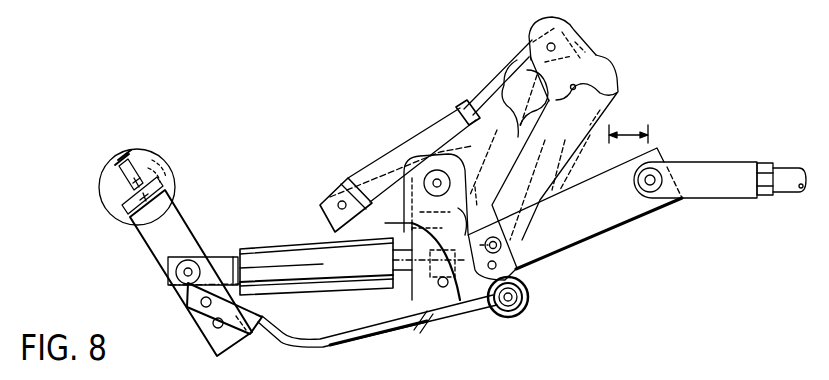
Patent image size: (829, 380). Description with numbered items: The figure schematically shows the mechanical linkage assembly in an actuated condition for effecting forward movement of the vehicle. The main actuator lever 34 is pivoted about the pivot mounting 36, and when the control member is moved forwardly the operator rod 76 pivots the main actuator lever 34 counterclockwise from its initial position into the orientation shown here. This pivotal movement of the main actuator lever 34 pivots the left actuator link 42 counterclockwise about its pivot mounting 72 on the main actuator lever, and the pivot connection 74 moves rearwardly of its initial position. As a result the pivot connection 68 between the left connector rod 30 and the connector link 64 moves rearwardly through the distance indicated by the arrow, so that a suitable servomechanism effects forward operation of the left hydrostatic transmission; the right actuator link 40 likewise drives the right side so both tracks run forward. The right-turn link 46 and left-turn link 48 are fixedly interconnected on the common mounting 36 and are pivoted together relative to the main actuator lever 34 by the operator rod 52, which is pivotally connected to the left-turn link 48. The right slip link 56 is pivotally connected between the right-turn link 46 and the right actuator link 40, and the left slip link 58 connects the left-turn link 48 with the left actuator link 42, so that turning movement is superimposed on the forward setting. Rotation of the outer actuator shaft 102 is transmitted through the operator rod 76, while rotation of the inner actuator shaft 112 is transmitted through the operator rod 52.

The left connector rod 30 is at (798, 174).
The main actuator lever 34 is at (470, 143).
The pivot mounting 36 is at (424, 183).
The right actuator link 40 is at (544, 161).
The left actuator link 42 is at (584, 50).
The right-turn link 46 is at (404, 290).
The left-turn link 48 is at (377, 215).
The operator rod 52 is at (381, 333).
The right slip link 56 is at (473, 110).
The left slip link 58 is at (422, 145).
The connector link 64 is at (622, 210).
The pivot connection 68 is at (667, 163).
The pivot mounting 72 is at (606, 97).
The pivot connection 74 is at (505, 242).
The operator rod 76 is at (250, 247).
The outer actuator shaft 102 is at (155, 156).
The inner actuator shaft 112 is at (127, 195).